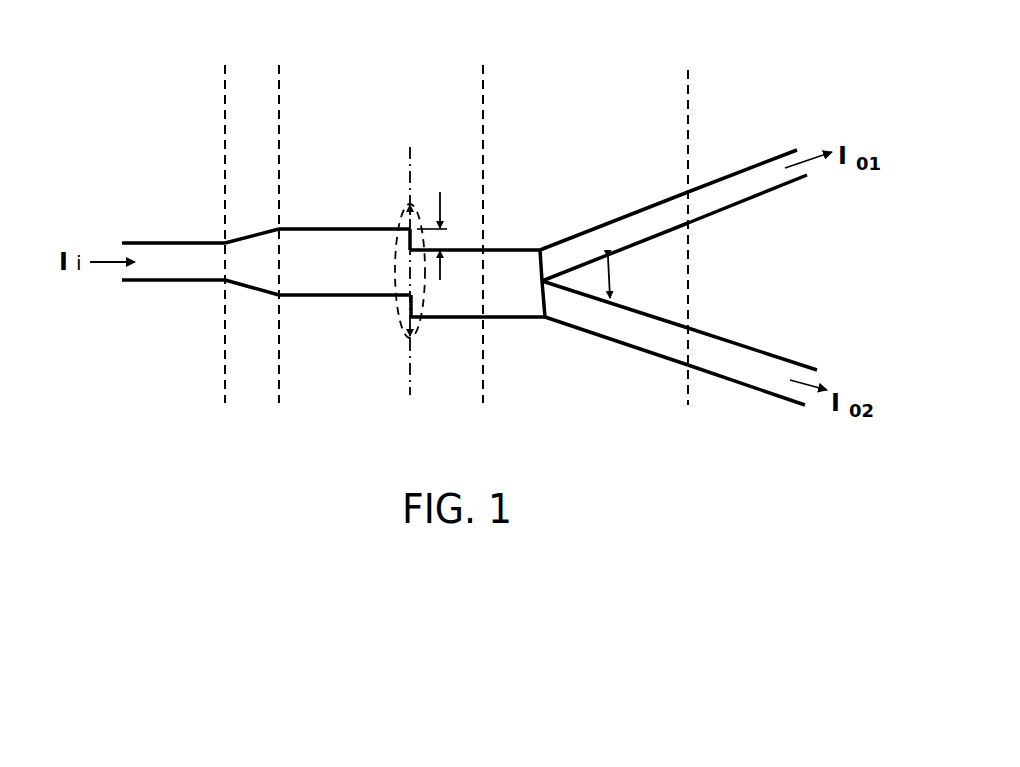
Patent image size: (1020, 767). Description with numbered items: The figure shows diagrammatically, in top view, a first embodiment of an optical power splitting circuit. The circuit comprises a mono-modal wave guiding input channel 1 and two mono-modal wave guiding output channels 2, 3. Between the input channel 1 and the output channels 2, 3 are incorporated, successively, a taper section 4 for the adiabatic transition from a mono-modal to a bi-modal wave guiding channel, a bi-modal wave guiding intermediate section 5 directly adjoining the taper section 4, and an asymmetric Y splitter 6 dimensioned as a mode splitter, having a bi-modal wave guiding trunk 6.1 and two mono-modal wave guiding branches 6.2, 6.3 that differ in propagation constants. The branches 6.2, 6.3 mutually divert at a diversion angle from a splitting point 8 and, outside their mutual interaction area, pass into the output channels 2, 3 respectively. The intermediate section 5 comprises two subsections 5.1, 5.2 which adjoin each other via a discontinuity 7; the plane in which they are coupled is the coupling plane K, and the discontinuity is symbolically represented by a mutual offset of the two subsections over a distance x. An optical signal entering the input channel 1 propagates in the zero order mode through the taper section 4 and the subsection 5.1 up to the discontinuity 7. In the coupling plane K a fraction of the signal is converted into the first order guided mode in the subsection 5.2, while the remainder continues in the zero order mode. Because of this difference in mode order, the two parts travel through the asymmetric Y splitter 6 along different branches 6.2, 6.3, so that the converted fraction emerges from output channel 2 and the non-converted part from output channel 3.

The input channel 1 is at (170, 261).
The output channel 2 is at (725, 197).
The output channel 3 is at (757, 370).
The taper section 4 is at (278, 63).
The intermediate section 5 is at (483, 63).
The subsection 5.1 is at (328, 270).
The subsection 5.2 is at (447, 307).
The asymmetric Y splitter 6 is at (688, 70).
The trunk 6.1 is at (512, 300).
The wave guiding branch 6.2 is at (627, 227).
The wave guiding branch 6.3 is at (637, 333).
The discontinuity 7 is at (403, 210).
The splitting point 8 is at (540, 250).
The coupling plane K is at (410, 363).